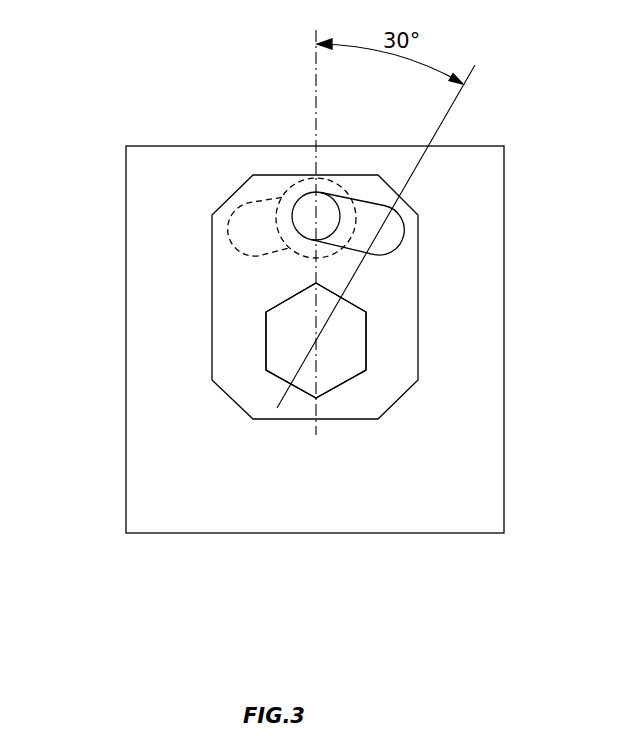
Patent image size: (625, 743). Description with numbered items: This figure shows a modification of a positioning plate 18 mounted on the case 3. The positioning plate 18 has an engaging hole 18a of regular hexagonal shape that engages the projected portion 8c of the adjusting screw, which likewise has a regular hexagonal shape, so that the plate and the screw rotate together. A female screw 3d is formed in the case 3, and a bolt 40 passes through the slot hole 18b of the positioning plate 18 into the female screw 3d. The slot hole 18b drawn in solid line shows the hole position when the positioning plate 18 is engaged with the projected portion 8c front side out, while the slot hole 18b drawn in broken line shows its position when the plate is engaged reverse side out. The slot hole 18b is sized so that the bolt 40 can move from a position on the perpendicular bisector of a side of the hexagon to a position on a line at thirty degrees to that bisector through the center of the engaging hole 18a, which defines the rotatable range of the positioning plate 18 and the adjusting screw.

The case 3 is at (504, 458).
The positioning plate 18 is at (388, 410).
The projected portion 8c is at (308, 372).
The engaging hole 18a is at (270, 358).
The slot hole 18b is at (243, 207).
The bolt 40 is at (286, 191).
The female screw 3d is at (311, 192).